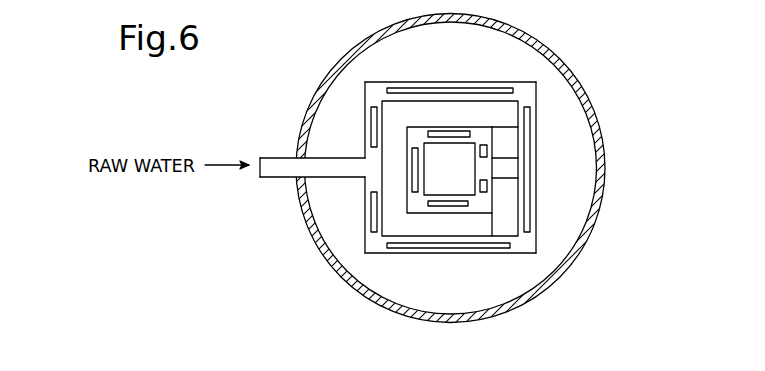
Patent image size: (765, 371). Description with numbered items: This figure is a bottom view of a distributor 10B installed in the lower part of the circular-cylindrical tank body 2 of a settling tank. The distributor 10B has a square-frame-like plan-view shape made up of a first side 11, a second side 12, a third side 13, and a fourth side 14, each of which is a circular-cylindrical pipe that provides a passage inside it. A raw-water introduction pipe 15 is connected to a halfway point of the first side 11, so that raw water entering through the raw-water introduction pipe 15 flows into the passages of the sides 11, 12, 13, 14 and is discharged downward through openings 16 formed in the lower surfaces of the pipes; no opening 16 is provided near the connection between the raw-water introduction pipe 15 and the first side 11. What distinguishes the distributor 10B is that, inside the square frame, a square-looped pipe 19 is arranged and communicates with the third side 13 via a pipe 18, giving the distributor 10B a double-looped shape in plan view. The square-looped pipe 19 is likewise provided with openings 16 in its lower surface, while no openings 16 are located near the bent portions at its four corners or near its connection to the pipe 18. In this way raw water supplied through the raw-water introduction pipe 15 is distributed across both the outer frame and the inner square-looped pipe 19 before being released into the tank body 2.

The tank body 2 is at (605, 165).
The distributor 10B is at (485, 74).
The first side 11 is at (365, 150).
The second side 12 is at (430, 82).
The third side 13 is at (537, 152).
The fourth side 14 is at (445, 254).
The raw-water introduction pipe 15 is at (268, 178).
The opening 16 is at (496, 88).
The pipe 18 is at (503, 181).
The square-looped pipe 19 is at (431, 126).